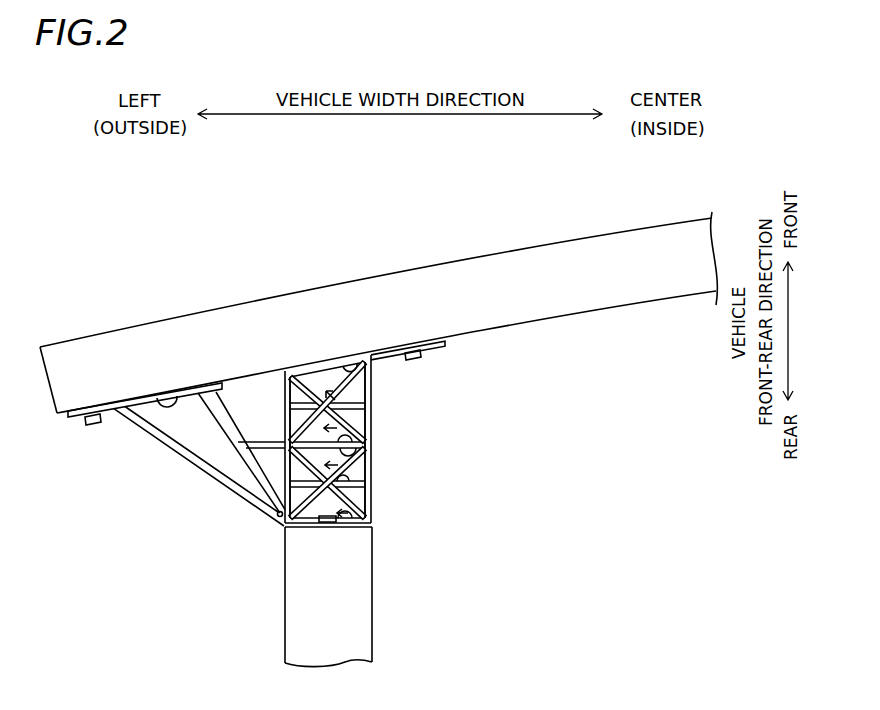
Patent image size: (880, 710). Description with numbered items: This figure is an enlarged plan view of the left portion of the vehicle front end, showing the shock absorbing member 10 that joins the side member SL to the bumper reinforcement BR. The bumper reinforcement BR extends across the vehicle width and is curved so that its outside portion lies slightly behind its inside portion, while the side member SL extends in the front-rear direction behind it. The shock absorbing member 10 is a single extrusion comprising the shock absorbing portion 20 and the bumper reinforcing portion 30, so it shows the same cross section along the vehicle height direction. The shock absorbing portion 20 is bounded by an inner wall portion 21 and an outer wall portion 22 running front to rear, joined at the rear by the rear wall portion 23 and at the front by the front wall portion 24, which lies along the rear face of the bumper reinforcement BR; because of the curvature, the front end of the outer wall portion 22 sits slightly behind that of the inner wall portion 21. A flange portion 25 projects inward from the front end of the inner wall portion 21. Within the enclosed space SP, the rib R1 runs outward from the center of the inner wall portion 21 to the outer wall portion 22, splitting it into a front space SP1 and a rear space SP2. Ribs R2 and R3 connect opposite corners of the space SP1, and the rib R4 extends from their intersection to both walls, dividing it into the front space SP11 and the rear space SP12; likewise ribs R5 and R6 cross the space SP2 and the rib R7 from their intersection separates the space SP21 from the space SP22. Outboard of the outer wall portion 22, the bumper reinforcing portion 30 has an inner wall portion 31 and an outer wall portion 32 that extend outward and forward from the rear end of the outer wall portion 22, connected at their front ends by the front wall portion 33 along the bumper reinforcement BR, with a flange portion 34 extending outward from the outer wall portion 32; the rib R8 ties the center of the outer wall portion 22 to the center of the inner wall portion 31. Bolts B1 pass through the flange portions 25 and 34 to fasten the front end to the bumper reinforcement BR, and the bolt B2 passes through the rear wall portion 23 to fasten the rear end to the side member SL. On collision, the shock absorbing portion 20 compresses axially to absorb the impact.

The shock absorbing member 10 is at (245, 549).
The shock absorbing portion 20 is at (499, 391).
The inner wall portion 21 is at (371, 391).
The outer wall portion 22 is at (285, 388).
The rear wall portion 23 is at (360, 519).
The front wall portion 24 is at (371, 373).
The flange portion 25 is at (445, 343).
The bumper reinforcing portion 30 is at (184, 474).
The inner wall portion 31 is at (218, 392).
The outer wall portion 32 is at (157, 432).
The front wall portion 33 is at (167, 396).
The flange portion 34 is at (72, 420).
The bolt B1 is at (92, 427).
The bolt B2 is at (275, 513).
The bumper reinforcement BR is at (518, 245).
The side member SL is at (372, 606).
The rib R1 is at (360, 440).
The rib R2 is at (305, 378).
The rib R3 is at (332, 388).
The rib R4 is at (366, 401).
The rib R5 is at (362, 455).
The rib R6 is at (366, 484).
The rib R7 is at (362, 490).
The rib R8 is at (252, 441).
The space SP is at (540, 415).
The space SP1 is at (488, 415).
The space SP2 is at (488, 470).
The space SP11 is at (368, 418).
The space SP12 is at (366, 428).
The space SP21 is at (368, 472).
The space SP22 is at (368, 497).